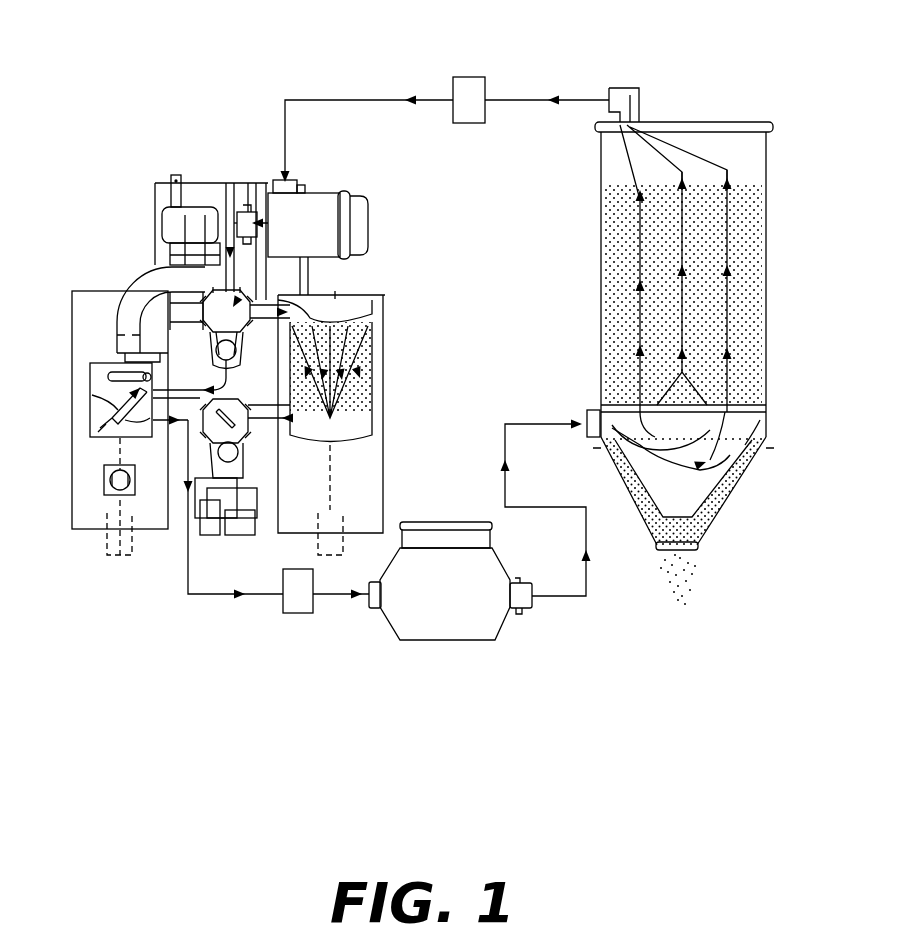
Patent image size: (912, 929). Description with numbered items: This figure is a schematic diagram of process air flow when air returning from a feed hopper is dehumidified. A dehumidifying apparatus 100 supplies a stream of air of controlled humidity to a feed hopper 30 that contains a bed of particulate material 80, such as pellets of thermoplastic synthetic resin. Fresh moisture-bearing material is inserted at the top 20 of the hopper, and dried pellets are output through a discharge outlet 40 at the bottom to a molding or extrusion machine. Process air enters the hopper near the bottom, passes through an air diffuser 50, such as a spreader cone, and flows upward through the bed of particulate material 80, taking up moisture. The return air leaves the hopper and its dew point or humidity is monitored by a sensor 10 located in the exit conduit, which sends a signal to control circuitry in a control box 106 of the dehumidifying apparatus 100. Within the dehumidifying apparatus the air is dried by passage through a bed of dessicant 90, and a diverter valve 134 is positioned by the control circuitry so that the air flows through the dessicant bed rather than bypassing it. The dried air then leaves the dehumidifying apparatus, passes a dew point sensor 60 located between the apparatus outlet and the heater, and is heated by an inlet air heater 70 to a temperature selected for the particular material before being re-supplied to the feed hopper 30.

The dew point or humidity sensor 10 is at (455, 80).
The top of the hopper 20 is at (650, 122).
The feed hopper 30 is at (770, 140).
The discharge outlet 40 is at (700, 552).
The air diffuser 50 is at (766, 448).
The dew point sensor 60 is at (288, 615).
The inlet air heater 70 is at (398, 620).
The bed of particulate material 80 is at (612, 248).
The bed of dessicant 90 is at (372, 386).
The dehumidifying apparatus 100 is at (103, 280).
The control box 106 is at (242, 183).
The diverter valve 134 is at (100, 437).